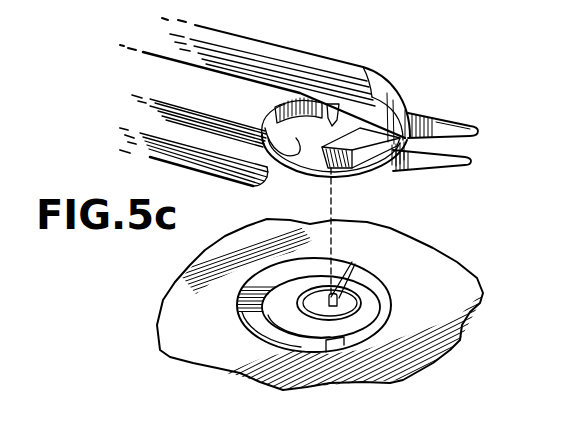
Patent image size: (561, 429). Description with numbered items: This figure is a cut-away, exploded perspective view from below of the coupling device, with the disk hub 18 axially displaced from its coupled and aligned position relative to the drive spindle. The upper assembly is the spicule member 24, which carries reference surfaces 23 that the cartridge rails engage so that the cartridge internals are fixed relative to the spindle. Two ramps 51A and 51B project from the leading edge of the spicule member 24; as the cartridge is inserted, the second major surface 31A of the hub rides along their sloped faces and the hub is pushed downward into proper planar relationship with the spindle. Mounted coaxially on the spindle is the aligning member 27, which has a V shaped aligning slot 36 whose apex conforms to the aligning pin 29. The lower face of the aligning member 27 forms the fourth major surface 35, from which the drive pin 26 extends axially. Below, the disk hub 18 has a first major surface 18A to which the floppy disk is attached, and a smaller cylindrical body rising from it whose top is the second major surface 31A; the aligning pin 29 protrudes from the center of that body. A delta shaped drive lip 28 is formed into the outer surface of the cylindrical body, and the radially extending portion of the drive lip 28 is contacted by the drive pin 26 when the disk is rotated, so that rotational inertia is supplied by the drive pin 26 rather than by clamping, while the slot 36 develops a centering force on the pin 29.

The reference surfaces 23 is at (333, 72).
The spicule member 24 is at (403, 94).
The drive pin 26 is at (284, 102).
The aligning member 27 is at (290, 158).
The fourth major surface 35 is at (262, 122).
The V shaped aligning slot 36 is at (328, 168).
The ramp 51A is at (448, 123).
The ramp 51B is at (447, 167).
The disk hub 18 is at (373, 334).
The drive lip 28 is at (310, 346).
The first major surface 18A is at (262, 284).
The second major surface 31A is at (268, 306).
The aligning pin 29 is at (355, 264).